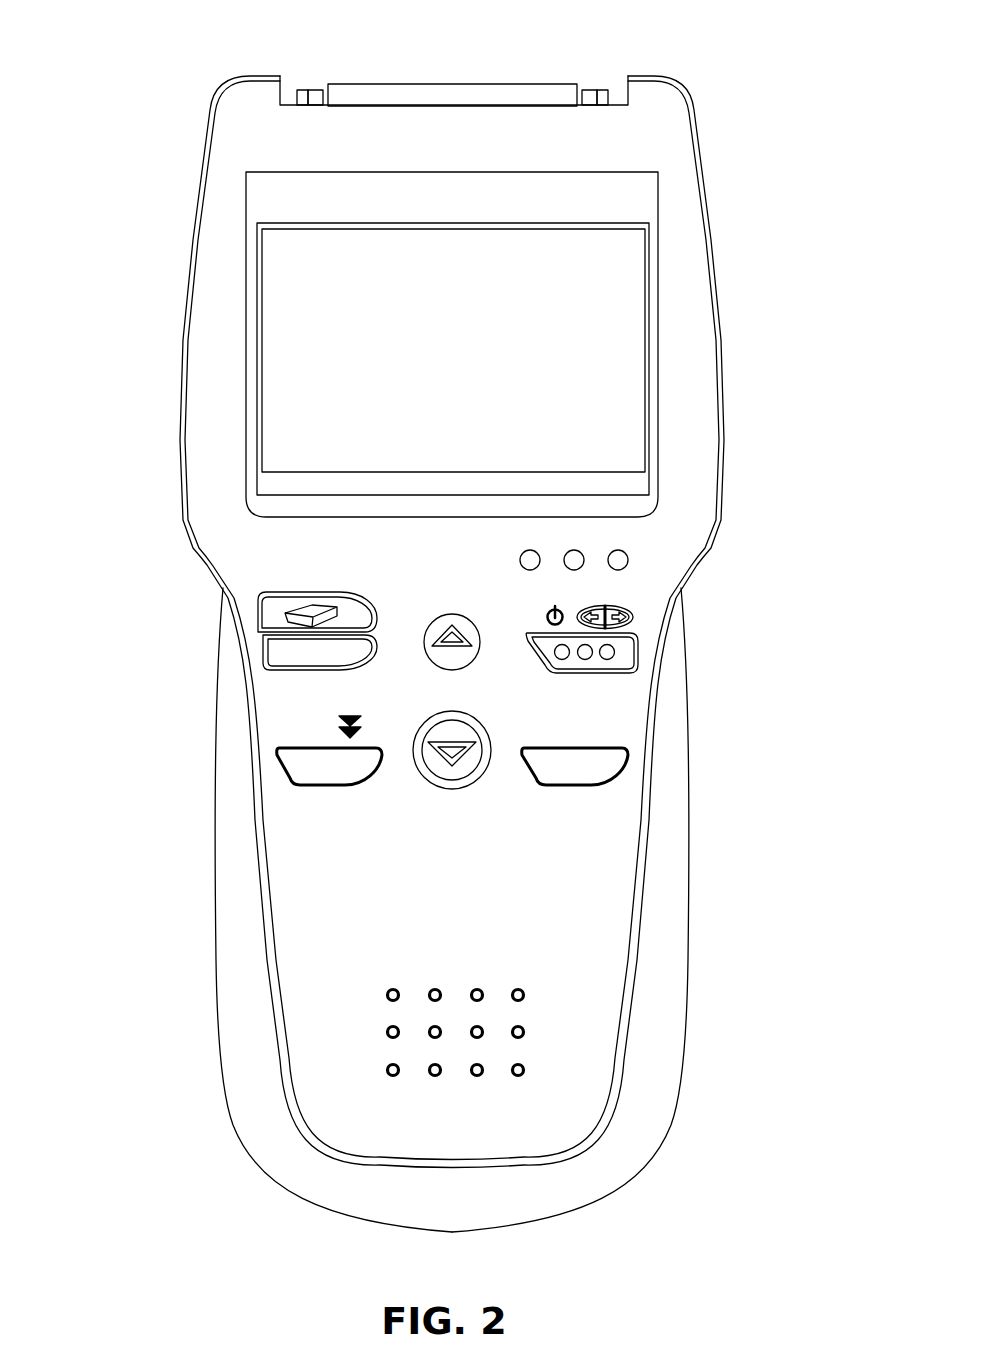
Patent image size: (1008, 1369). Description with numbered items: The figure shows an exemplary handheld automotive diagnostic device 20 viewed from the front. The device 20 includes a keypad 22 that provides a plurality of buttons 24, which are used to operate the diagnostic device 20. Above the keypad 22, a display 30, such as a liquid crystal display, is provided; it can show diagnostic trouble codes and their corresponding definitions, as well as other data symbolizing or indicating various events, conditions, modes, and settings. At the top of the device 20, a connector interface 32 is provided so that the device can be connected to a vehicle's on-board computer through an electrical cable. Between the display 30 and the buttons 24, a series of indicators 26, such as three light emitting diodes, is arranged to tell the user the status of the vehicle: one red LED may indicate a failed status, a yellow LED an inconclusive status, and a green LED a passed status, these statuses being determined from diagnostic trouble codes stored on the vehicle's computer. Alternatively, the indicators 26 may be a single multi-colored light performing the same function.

The handheld automotive diagnostic device 20 is at (748, 52).
The keypad 22 is at (682, 538).
The buttons 24 is at (438, 632).
The indicators 26 is at (625, 552).
The display 30 is at (323, 368).
The connector interface 32 is at (470, 95).